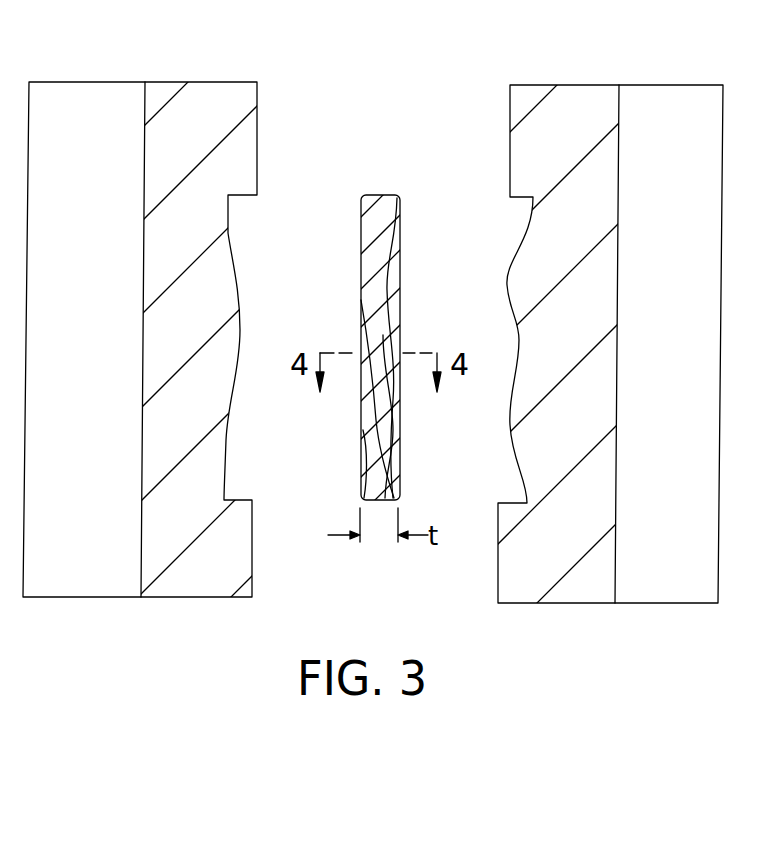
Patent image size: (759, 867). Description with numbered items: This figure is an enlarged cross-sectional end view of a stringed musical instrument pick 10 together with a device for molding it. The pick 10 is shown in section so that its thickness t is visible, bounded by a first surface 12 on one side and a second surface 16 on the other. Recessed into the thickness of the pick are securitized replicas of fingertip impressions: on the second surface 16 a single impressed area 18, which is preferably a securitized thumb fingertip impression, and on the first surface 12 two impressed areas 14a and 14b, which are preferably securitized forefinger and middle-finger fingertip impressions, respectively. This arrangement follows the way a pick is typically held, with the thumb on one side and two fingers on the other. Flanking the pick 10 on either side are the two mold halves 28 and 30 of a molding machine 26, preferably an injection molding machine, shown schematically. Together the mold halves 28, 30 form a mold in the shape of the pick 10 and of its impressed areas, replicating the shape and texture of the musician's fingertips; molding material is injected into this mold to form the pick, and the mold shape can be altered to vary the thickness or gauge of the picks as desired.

The pick 10 is at (389, 309).
The first surface 12 is at (398, 458).
The impressed area 14a is at (403, 312).
The impressed area 14b is at (398, 425).
The second surface 16 is at (360, 470).
The impressed area 18 is at (362, 310).
The molding machine 26 is at (161, 364).
The mold half 28 is at (185, 135).
The mold half 30 is at (567, 135).